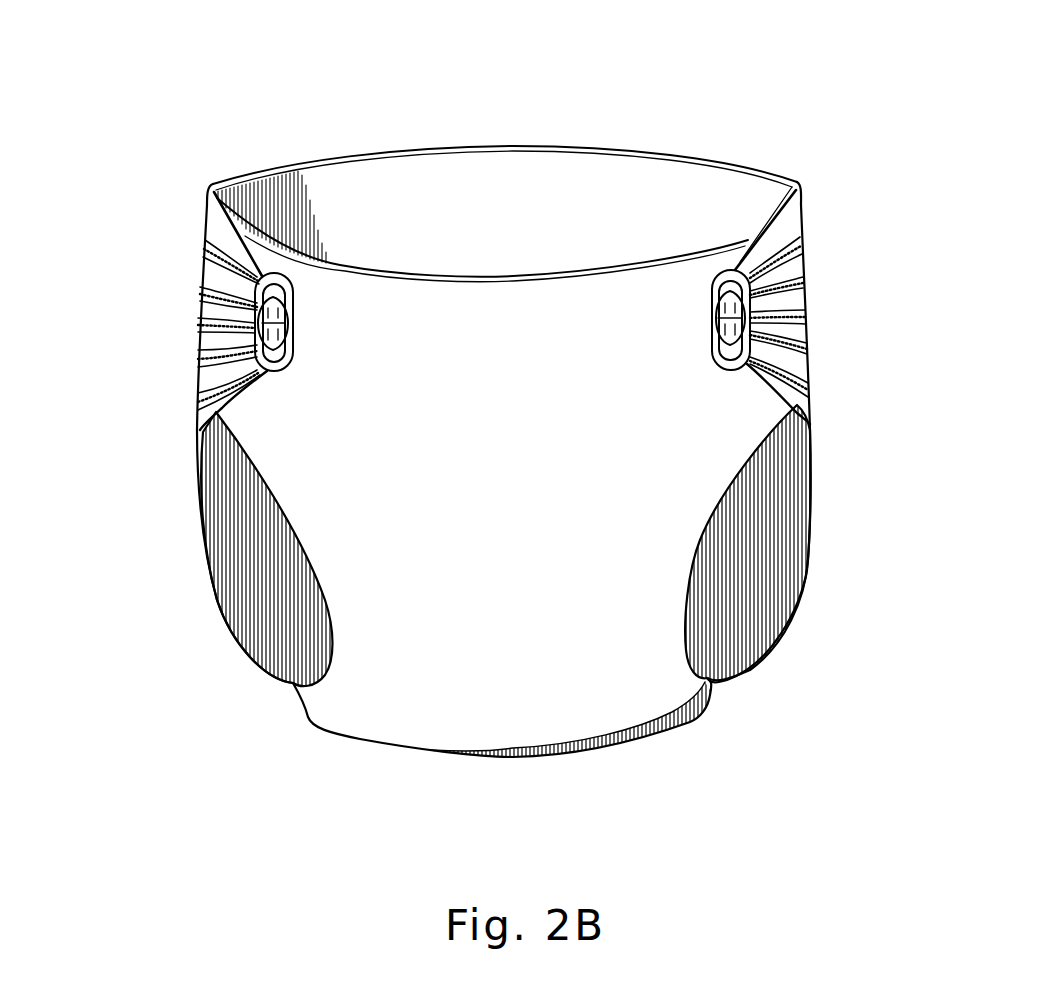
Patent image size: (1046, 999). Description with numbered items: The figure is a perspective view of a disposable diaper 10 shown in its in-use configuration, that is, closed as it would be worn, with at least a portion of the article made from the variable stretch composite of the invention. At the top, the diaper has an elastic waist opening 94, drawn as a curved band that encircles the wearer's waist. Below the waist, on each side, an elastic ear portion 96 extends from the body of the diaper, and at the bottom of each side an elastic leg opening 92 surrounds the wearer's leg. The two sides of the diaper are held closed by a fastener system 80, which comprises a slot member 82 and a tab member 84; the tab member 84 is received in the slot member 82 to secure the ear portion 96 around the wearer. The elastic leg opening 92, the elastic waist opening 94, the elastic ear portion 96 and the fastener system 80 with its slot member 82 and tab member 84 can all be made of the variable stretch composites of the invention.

The disposable diaper 10 is at (312, 94).
The fastener system 80 is at (248, 324).
The slot member 82 is at (805, 360).
The tab member 84 is at (805, 313).
The elastic leg opening 92 is at (313, 560).
The elastic waist opening 94 is at (530, 148).
The elastic ear portion 96 is at (200, 250).